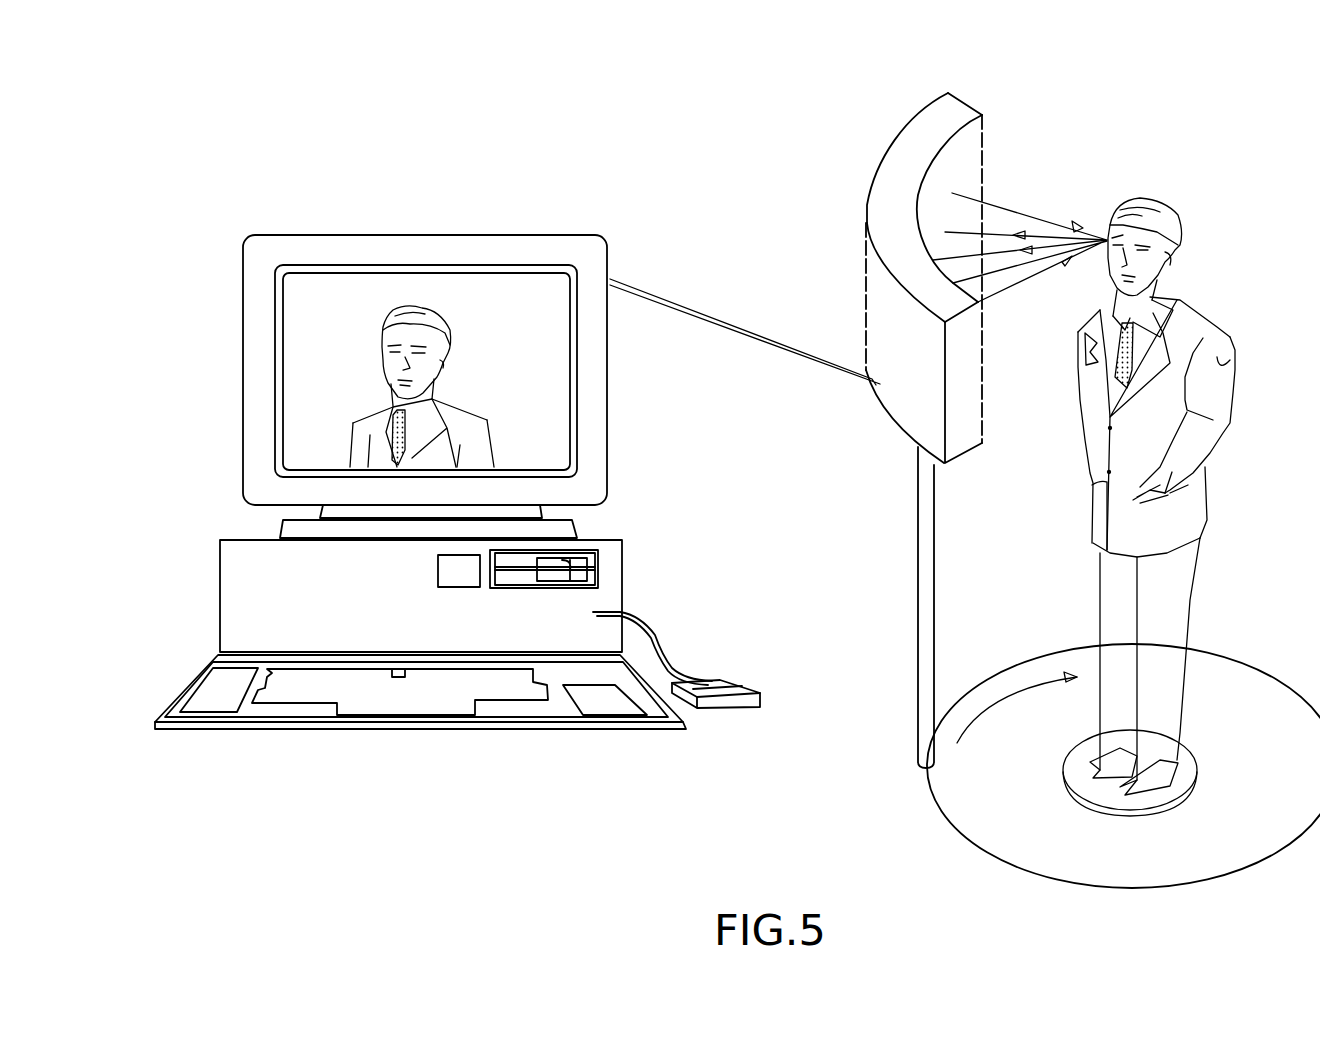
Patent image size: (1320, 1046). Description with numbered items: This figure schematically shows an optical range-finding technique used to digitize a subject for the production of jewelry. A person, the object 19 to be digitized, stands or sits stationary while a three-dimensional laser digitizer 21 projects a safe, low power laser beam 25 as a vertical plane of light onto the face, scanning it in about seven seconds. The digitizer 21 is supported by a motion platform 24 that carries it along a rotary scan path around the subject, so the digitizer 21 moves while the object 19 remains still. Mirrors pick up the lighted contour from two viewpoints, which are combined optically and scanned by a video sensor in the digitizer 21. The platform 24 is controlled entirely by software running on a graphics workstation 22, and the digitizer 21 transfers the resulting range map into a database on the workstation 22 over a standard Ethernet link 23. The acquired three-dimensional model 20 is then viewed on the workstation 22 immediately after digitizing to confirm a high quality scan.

The object to be digitized 19 is at (1177, 215).
The 3-D model 20 is at (408, 322).
The 3-D laser digitizer 21 is at (882, 298).
The graphics workstation 22 is at (572, 255).
The Ethernet link 23 is at (717, 322).
The motion platform 24 is at (1022, 695).
The laser beam 25 is at (1018, 208).